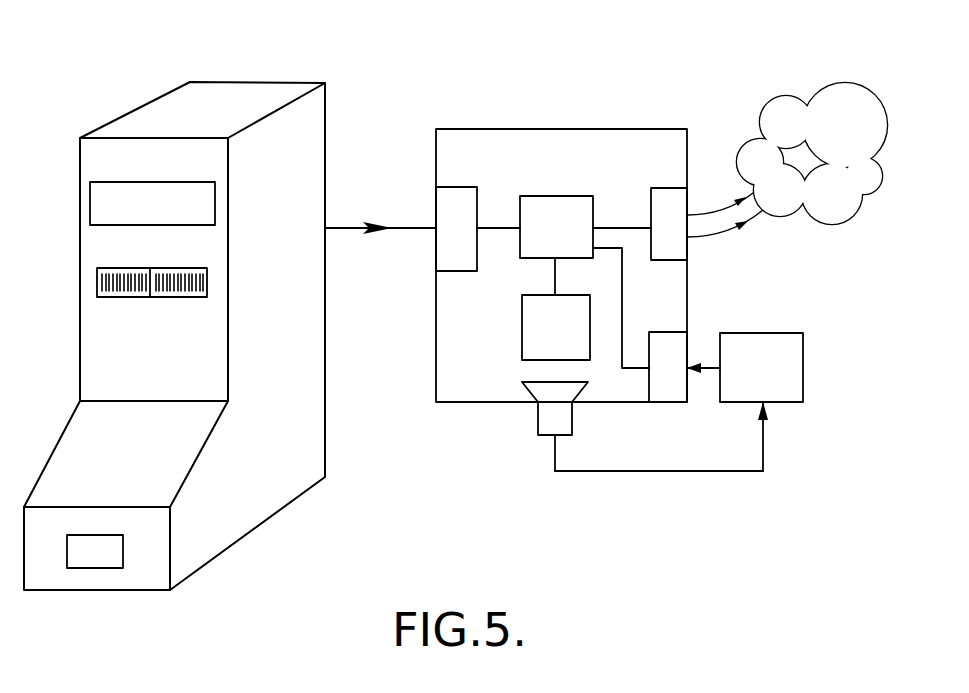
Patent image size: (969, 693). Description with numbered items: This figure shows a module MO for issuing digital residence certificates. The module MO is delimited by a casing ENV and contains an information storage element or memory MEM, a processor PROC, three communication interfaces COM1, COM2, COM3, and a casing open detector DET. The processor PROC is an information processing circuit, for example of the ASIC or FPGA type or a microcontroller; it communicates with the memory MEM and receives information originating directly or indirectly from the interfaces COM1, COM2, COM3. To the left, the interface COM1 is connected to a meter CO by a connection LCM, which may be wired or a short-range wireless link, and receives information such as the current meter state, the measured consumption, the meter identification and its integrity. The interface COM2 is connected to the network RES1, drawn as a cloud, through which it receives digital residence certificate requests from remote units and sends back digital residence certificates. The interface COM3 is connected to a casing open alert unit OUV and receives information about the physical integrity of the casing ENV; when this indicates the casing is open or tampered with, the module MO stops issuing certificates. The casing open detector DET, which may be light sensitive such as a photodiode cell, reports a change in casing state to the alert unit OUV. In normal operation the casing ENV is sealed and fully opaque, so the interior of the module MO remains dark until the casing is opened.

The meter CO is at (53, 448).
The connection LCM is at (365, 225).
The casing ENV is at (435, 352).
The module MO is at (478, 359).
The communication interface COM1 is at (463, 202).
The communication interface COM2 is at (674, 203).
The communication interface COM3 is at (660, 383).
The processor PROC is at (556, 227).
The information storage element MEM is at (556, 327).
The network RES1 is at (788, 99).
The casing open alert unit OUV is at (679, 402).
The casing open detector DET is at (552, 420).